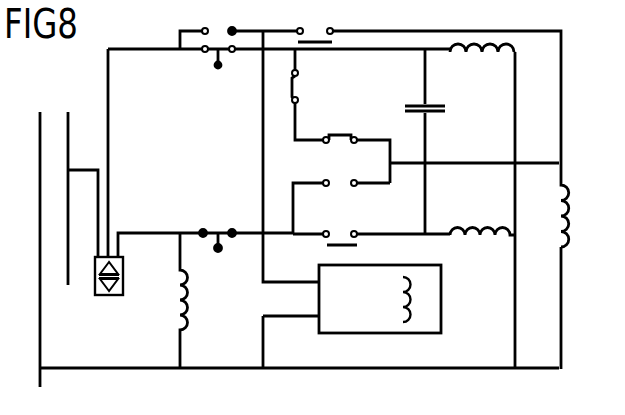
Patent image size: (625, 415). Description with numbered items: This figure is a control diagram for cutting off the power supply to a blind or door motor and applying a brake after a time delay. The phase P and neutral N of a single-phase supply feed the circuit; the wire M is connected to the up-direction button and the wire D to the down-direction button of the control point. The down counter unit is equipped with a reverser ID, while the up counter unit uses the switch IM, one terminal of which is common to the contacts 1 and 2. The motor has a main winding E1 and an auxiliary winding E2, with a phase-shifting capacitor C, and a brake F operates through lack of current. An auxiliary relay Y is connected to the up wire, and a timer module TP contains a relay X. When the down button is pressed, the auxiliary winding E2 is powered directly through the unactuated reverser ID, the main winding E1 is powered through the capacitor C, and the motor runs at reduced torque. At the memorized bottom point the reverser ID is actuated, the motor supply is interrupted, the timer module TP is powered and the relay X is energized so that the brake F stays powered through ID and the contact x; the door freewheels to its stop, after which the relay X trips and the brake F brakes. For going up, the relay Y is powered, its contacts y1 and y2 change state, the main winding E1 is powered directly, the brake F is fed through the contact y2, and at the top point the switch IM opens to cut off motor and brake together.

The position 1 / contact 1 is at (210, 63).
The position 2 / contact 2 is at (208, 24).
The reverser ID is at (234, 67).
The reversing contact x is at (315, 21).
The contact y1 is at (356, 198).
The contact y2 is at (341, 193).
The auxiliary winding E2 is at (482, 64).
The phase-shifting capacitor C is at (435, 141).
The main winding E1 is at (482, 248).
The brake F is at (575, 205).
The neutral N is at (40, 235).
The phase P is at (80, 184).
The down-direction wire D is at (112, 231).
The up-direction wire M is at (160, 232).
The reverser IM is at (218, 225).
The auxiliary relay Y is at (194, 300).
The relay X is at (416, 302).
The timer module TP is at (402, 311).